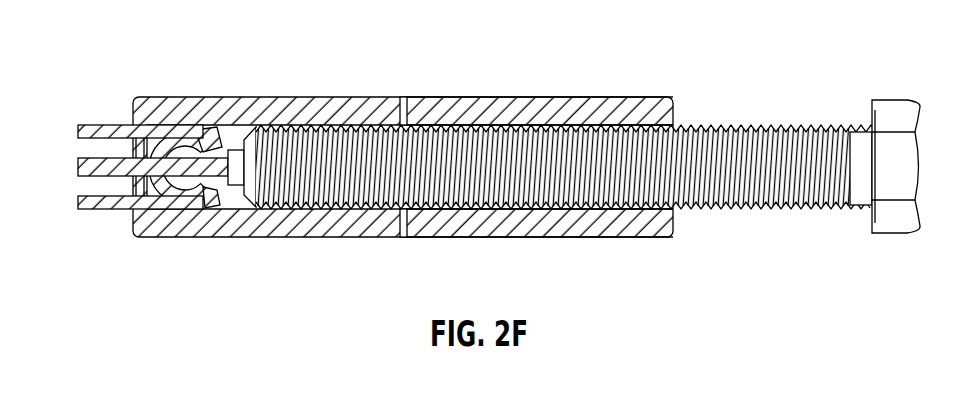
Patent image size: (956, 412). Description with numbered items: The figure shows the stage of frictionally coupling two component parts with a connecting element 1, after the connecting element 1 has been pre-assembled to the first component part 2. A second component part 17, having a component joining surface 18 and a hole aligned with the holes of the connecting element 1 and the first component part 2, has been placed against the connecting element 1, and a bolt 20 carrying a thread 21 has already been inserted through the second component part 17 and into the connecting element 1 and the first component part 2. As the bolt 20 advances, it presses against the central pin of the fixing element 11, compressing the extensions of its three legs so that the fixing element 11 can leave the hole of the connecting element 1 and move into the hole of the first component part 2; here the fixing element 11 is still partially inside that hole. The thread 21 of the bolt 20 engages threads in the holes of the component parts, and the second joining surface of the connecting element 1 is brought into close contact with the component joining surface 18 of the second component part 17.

The connecting element 1 is at (403, 154).
The first component part 2 is at (242, 112).
The fixing element 11 is at (145, 163).
The second component part 17 is at (438, 115).
The component joining surface 18 is at (407, 213).
The bolt 20 is at (520, 143).
The thread 21 is at (490, 120).